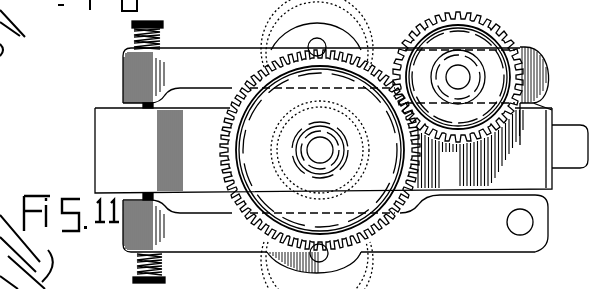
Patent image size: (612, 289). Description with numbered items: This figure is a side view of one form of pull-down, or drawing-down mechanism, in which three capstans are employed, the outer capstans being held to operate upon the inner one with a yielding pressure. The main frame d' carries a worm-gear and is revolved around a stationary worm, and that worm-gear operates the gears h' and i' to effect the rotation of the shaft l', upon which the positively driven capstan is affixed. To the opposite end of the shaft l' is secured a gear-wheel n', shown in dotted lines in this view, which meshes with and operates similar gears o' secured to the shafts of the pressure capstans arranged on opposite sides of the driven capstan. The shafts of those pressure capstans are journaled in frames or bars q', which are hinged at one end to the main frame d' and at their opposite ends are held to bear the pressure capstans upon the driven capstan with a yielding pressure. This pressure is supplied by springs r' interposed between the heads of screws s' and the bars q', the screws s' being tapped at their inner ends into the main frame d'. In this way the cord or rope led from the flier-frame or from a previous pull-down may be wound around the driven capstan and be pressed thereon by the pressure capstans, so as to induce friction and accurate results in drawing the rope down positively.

The frame d' is at (341, 120).
The frames or bars q' is at (335, 150).
The gear i' is at (320, 125).
The gear-wheel n' is at (332, 150).
The shaft l' is at (341, 150).
The gears o' is at (331, 144).
The gear h' is at (467, 149).
The screws s' is at (163, 146).
The springs r' is at (150, 152).